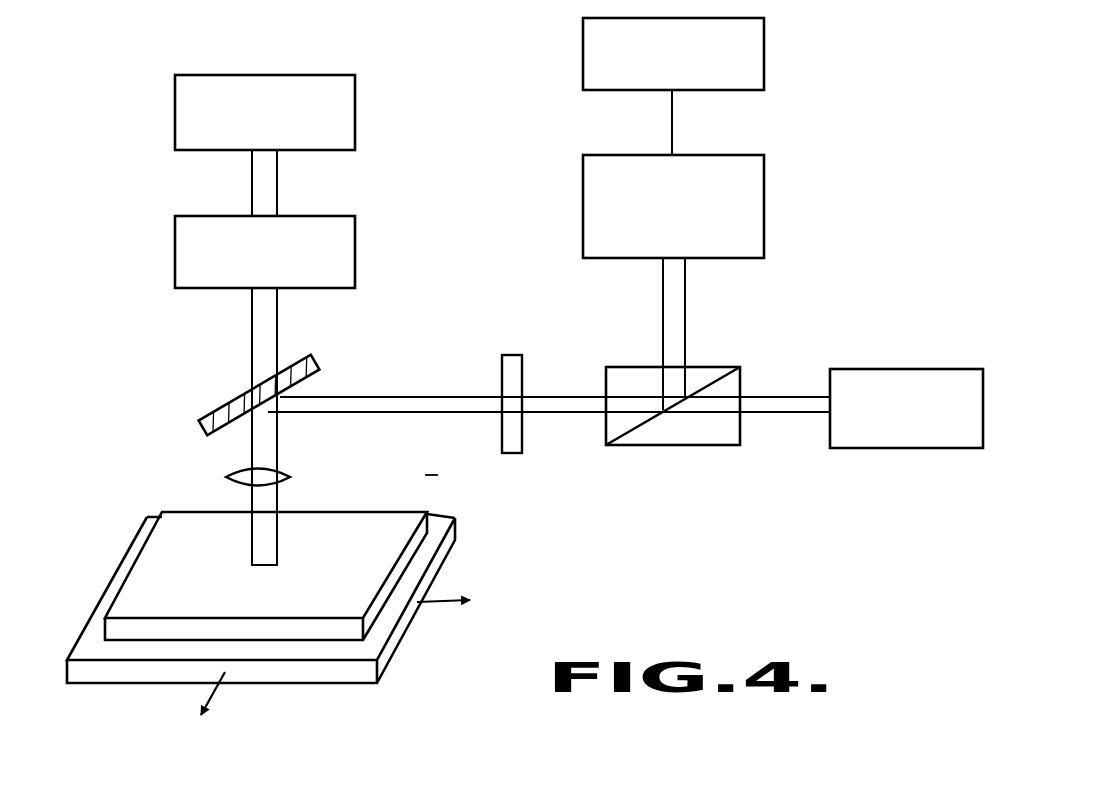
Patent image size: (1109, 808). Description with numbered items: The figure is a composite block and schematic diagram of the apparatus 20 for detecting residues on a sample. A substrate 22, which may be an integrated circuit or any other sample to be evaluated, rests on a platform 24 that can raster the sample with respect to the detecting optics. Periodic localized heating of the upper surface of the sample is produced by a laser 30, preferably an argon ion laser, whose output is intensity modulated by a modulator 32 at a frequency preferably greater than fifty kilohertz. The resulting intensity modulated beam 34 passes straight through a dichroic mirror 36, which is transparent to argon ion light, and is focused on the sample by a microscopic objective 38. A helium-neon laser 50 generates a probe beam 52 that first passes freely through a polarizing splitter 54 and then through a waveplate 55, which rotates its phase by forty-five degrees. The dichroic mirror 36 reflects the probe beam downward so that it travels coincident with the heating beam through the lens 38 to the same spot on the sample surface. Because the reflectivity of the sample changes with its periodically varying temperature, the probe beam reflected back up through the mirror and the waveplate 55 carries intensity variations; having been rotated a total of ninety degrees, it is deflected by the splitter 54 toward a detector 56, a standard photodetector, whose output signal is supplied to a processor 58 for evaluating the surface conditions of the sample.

The apparatus 20 is at (112, 114).
The substrate 22 is at (181, 535).
The platform 24 is at (93, 630).
The laser 30 is at (357, 113).
The modulator 32 is at (358, 248).
The intensity modulated beam 34 is at (278, 186).
The dichroic mirror 36 is at (230, 400).
The microscopic objective 38 is at (235, 476).
The helium-neon laser 50 is at (908, 368).
The probe beam 52 is at (787, 397).
The polarizing splitter 54 is at (713, 365).
The waveplate 55 is at (510, 352).
The detector 56 is at (766, 202).
The processor 58 is at (765, 62).